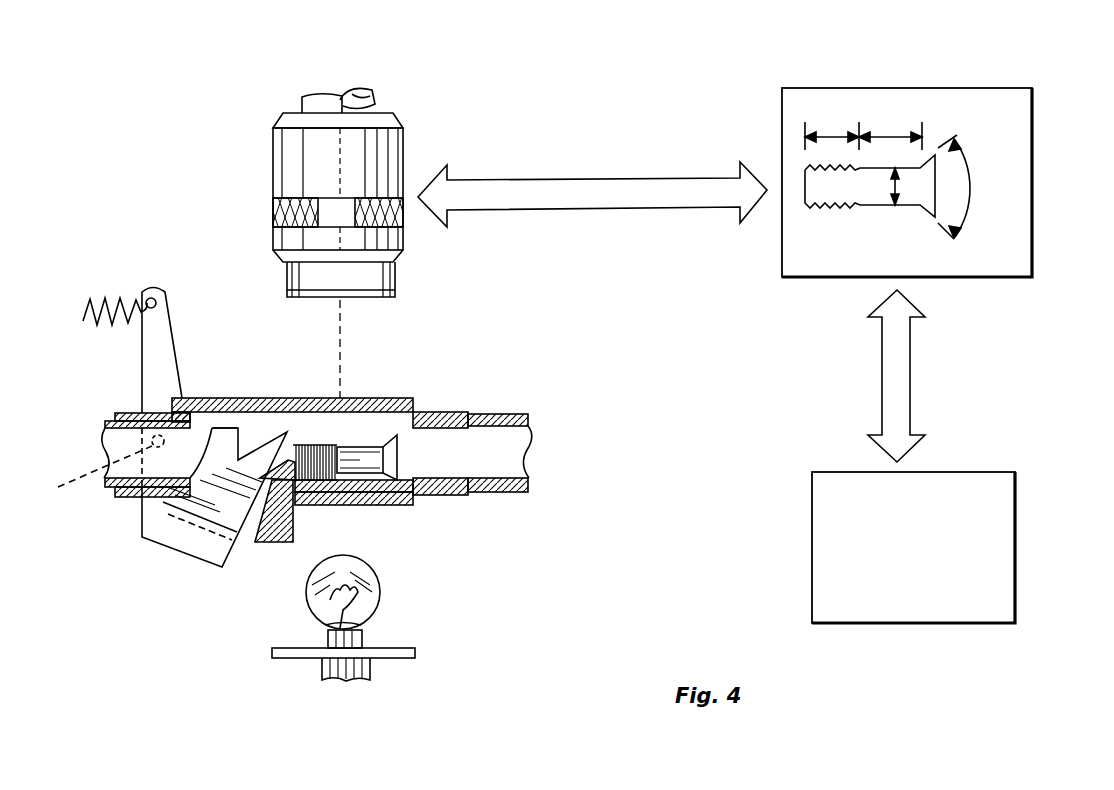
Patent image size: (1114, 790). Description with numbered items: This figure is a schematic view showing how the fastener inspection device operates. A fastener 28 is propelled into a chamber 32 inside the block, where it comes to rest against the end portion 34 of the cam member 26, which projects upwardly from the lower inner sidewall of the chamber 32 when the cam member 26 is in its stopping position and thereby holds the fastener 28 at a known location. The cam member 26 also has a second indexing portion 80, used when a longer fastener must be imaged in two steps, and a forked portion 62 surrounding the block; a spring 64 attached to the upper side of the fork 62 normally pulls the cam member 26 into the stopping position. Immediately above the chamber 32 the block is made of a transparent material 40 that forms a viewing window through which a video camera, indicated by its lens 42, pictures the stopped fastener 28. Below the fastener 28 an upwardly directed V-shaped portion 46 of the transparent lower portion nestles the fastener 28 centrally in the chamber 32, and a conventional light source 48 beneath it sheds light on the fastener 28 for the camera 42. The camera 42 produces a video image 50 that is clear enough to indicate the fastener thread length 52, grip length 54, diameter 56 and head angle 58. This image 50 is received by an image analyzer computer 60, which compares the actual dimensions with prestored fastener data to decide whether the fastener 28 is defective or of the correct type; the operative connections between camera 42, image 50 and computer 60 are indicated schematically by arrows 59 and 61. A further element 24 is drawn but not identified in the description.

The light beam path 24 is at (93, 471).
The cam member 26 is at (160, 552).
The fastener 28 is at (377, 468).
The chamber 32 is at (372, 424).
The end portion of the cam member 34 is at (270, 440).
The transparent material 40 is at (355, 405).
The video camera 42 is at (273, 170).
The V-shaped portion 46 is at (292, 543).
The light source 48 is at (380, 600).
The video image 50 is at (895, 88).
The thread length 52 is at (832, 130).
The grip length 54 is at (895, 130).
The diameter 56 is at (892, 187).
The head angle 58 is at (970, 183).
The arrow 59 is at (575, 180).
The image analyzer computer 60 is at (1018, 520).
The arrow 61 is at (912, 395).
The forked portion 62 is at (147, 392).
The spring 64 is at (120, 300).
The second indexing portion 80 is at (222, 428).